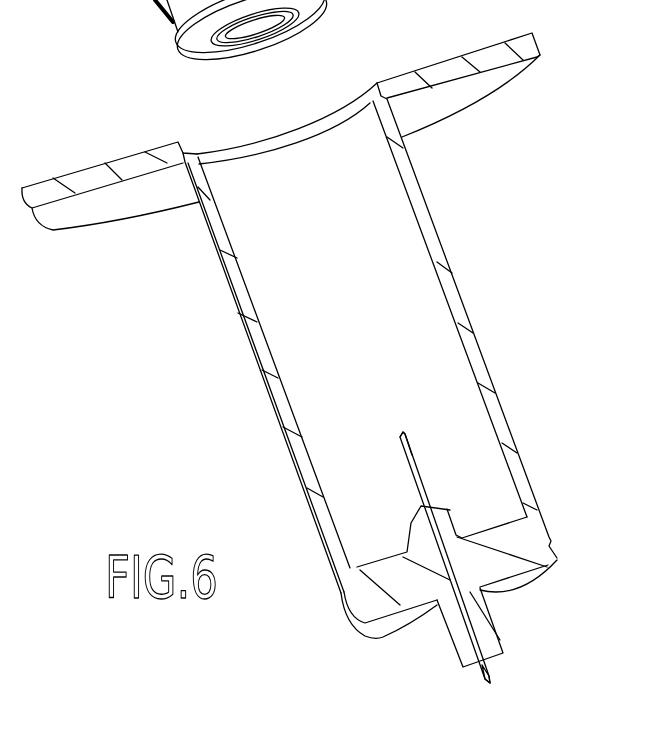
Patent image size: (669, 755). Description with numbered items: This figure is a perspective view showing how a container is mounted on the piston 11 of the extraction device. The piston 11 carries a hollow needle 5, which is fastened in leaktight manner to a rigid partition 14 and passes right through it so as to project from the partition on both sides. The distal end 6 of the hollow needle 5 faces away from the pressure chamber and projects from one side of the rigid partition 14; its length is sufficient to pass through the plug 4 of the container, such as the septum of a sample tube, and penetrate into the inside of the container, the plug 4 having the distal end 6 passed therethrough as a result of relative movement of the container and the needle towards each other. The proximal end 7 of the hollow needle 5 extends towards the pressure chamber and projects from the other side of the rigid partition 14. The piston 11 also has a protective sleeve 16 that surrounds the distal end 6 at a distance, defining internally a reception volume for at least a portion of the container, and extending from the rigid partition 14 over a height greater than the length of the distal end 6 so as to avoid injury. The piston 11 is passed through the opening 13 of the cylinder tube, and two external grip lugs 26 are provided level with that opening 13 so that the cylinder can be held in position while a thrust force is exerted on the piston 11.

The plug 4 is at (255, 20).
The hollow needle 5 is at (417, 470).
The distal end 6 is at (398, 442).
The proximal end 7 is at (490, 683).
The piston 11 is at (468, 304).
The opening 13 is at (235, 163).
The rigid partition 14 is at (365, 597).
The protective sleeve 16 is at (265, 352).
The external grip lugs 26 is at (487, 55).